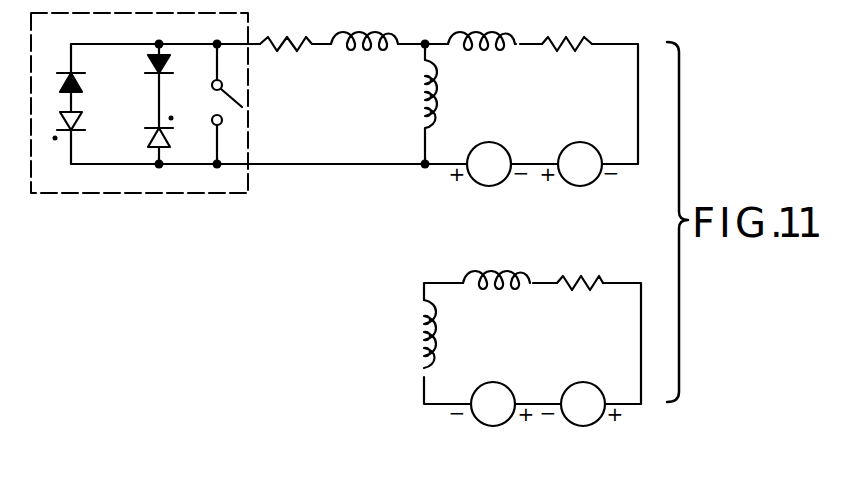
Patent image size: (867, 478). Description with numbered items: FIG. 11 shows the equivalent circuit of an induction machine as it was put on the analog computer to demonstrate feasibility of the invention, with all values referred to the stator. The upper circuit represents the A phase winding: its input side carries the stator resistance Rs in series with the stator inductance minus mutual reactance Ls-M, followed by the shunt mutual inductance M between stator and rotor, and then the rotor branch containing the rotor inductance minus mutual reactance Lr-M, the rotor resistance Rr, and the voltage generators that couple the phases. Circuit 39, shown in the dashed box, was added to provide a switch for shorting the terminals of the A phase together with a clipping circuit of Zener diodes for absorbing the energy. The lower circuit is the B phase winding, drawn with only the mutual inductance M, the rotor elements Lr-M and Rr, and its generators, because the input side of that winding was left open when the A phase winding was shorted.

The circuit 39 is at (113, 193).
The stator resistance Rs is at (286, 31).
The stator inductance minus mutual reactance Ls-M is at (360, 26).
The mutual inductance M is at (425, 206).
The rotor inductance minus mutual reactance Lr-M is at (491, 163).
The rotor resistance Rr is at (572, 167).